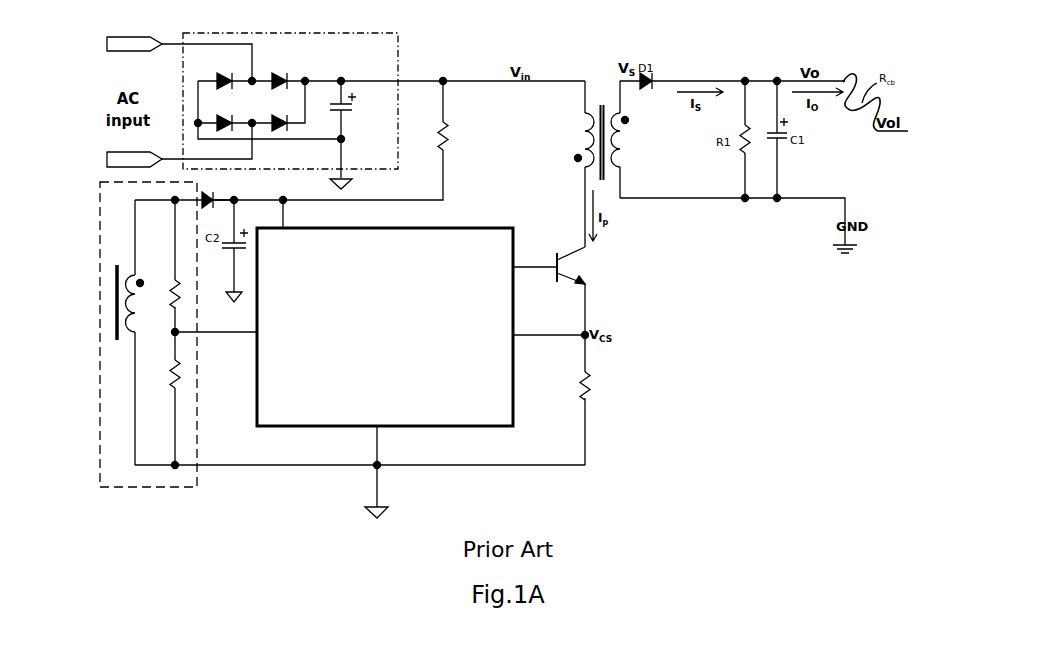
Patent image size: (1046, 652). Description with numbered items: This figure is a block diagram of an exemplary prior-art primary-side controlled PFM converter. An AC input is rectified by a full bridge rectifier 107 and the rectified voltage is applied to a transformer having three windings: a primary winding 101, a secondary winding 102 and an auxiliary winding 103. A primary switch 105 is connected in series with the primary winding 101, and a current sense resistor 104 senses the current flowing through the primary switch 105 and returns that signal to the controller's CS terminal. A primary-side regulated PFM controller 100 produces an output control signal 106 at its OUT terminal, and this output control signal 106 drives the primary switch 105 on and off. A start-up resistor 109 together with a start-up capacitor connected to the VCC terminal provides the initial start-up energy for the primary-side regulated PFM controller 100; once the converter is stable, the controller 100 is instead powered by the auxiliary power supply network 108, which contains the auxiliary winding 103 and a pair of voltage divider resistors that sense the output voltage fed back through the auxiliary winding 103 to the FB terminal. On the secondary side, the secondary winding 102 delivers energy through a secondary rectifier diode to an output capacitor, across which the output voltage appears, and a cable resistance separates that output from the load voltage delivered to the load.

The primary-side regulated PFM controller 100 is at (430, 226).
The primary winding 101 is at (580, 121).
The secondary winding 102 is at (627, 140).
The auxiliary winding 103 is at (120, 262).
The current sense resistor Rcs 104 is at (598, 383).
The primary switch 105 is at (585, 265).
The output control signal 106 is at (541, 254).
The full bridge rectifier 107 is at (383, 60).
The auxiliary power supply network 108 is at (342, 344).
The resistor 109 is at (450, 133).